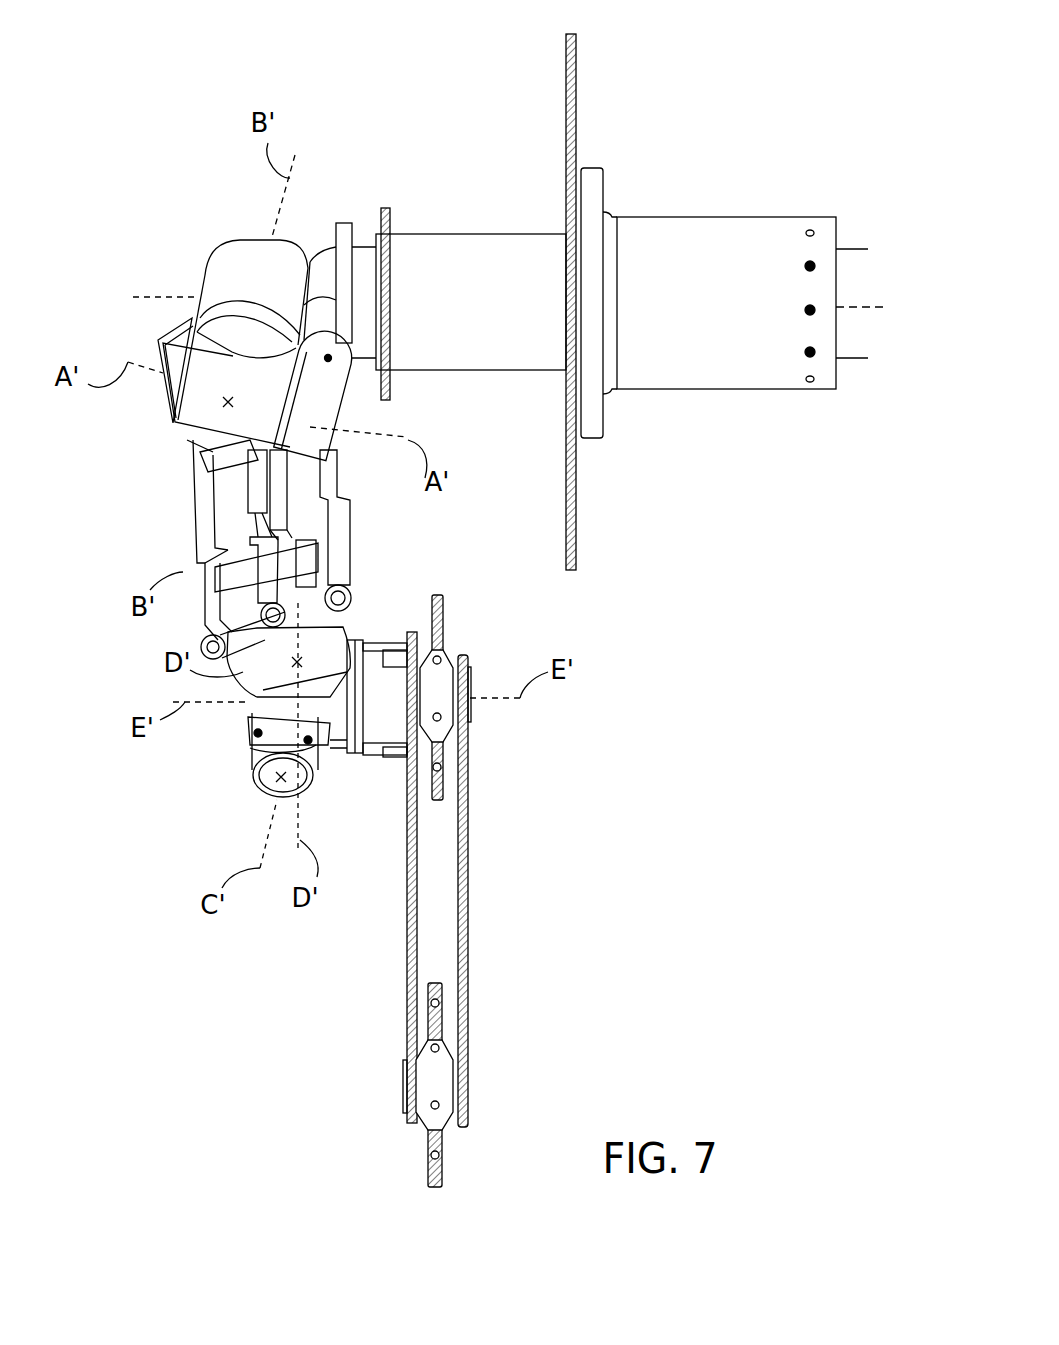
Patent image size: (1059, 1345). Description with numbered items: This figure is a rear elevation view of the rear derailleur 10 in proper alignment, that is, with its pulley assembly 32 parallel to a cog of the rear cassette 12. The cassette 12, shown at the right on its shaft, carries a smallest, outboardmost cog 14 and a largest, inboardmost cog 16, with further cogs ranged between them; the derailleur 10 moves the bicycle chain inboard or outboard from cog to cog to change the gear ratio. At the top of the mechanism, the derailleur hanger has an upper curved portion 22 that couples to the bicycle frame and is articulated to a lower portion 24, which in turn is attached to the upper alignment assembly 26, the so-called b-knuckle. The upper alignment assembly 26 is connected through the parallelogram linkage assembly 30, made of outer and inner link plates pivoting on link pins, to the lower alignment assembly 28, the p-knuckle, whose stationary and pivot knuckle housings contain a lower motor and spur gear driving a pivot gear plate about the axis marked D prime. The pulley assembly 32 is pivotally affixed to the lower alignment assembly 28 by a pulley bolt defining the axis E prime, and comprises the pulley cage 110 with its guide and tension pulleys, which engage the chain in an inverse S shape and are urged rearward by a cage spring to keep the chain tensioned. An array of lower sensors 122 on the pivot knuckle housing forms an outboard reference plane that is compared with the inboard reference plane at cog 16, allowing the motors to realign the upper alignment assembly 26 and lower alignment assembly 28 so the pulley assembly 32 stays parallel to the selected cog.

The rear derailleur 10 is at (655, 692).
The rear cassette 12 is at (465, 245).
The smallest, outboardmost cog 14 is at (388, 208).
The largest, inboardmost cog 16 is at (566, 110).
The upper curved portion 22 is at (342, 222).
The lower portion 24 is at (312, 430).
The upper alignment assembly 26 is at (143, 452).
The lower alignment assembly 28 is at (187, 822).
The linkage assembly 30 is at (147, 550).
The pulley assembly 32 is at (300, 1010).
The pulley cage 110 is at (468, 905).
The lower sensors 122 is at (393, 657).